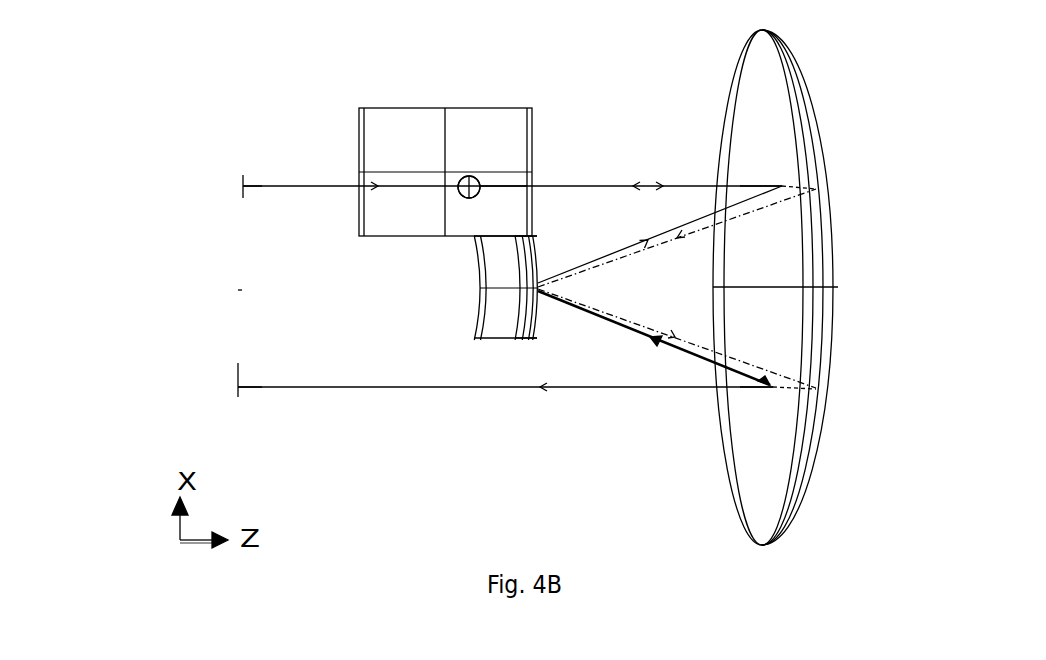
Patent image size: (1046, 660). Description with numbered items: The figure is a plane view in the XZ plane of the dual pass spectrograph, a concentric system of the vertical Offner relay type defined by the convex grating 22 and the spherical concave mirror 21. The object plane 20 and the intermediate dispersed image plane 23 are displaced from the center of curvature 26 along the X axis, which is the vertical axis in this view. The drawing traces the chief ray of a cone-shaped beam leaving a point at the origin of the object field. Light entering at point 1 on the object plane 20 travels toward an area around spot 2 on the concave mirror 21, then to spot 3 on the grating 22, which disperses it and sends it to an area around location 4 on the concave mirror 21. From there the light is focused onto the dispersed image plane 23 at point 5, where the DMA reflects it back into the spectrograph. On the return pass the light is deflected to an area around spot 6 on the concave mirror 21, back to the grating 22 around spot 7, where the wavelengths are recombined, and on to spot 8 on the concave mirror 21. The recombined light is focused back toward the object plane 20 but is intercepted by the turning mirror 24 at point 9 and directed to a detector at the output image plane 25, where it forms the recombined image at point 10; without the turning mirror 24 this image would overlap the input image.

The entry point 1 is at (260, 213).
The spot on concave mirror 2 is at (811, 189).
The spot on convex grating 3 is at (517, 256).
The location on concave mirror 4 is at (807, 397).
The dispersed image point 5 is at (256, 369).
The spot on concave mirror 6 is at (760, 410).
The spot on convex grating 7 is at (517, 317).
The spot on concave mirror 8 is at (761, 163).
The point on turning mirror 9 is at (503, 202).
The output image point 10 is at (465, 175).
The object plane 20 is at (238, 156).
The concave mirror 21 is at (742, 505).
The convex grating 22 is at (458, 303).
The dispersed image plane 23 is at (238, 420).
The turning mirror 24 is at (398, 92).
The output image plane 25 is at (509, 150).
The center of curvature 26 is at (222, 290).